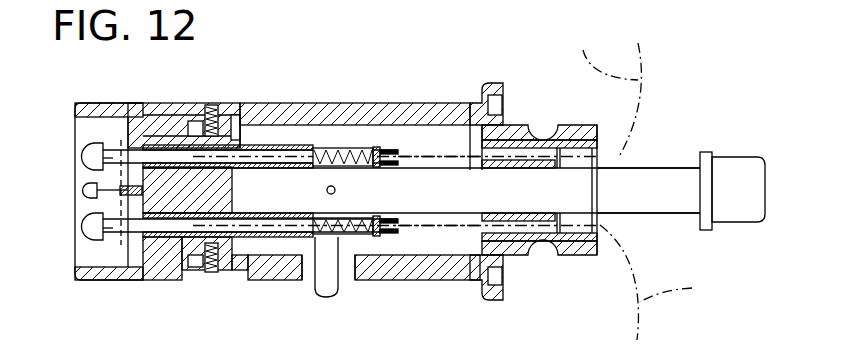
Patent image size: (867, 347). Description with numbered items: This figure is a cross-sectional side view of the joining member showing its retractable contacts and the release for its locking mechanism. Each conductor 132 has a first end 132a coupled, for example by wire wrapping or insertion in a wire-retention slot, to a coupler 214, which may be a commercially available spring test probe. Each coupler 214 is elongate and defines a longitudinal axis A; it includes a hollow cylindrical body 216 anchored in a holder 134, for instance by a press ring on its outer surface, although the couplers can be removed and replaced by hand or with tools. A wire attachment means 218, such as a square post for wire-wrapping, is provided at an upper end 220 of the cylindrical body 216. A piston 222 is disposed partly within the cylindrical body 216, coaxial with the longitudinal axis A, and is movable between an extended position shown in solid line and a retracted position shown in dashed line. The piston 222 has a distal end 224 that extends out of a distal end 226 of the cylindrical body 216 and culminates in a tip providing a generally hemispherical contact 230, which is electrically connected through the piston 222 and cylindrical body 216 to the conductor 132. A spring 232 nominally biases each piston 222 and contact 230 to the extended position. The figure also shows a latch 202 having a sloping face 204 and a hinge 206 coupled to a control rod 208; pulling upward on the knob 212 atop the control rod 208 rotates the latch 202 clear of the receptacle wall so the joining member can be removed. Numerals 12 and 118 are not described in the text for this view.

The optical sensor assembly 12 is at (388, 3).
The housing wall 118 is at (447, 280).
The conductors 132 is at (653, 178).
The first ends 132a is at (403, 157).
The holder 134 is at (170, 140).
The latch 202 is at (350, 288).
The sloping face 204 is at (316, 287).
The hinge 206 is at (336, 191).
The control rod 208 is at (653, 167).
The knob 212 is at (735, 168).
The coupler 214 is at (246, 165).
The hollow cylindrical body 216 is at (302, 148).
The wire attachment means 218 is at (387, 152).
The upper end 220 is at (367, 147).
The piston 222 is at (141, 150).
The distal end 224 is at (108, 148).
The distal end 226 is at (130, 180).
The contact 230 is at (80, 158).
The spring 232 is at (330, 172).
The longitudinal axis A is at (272, 150).